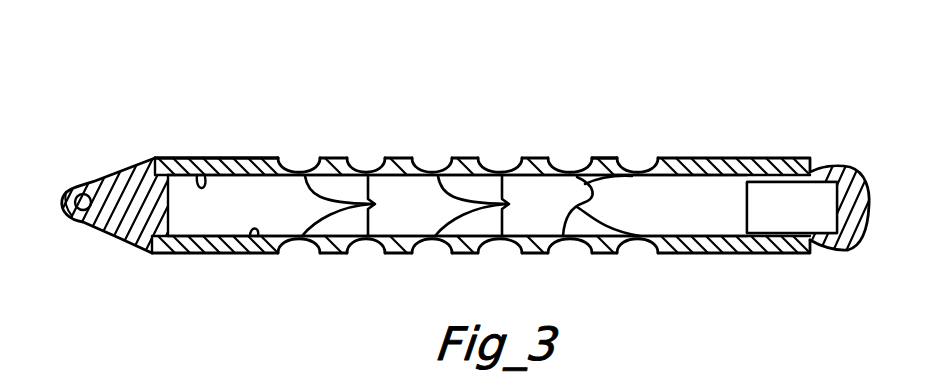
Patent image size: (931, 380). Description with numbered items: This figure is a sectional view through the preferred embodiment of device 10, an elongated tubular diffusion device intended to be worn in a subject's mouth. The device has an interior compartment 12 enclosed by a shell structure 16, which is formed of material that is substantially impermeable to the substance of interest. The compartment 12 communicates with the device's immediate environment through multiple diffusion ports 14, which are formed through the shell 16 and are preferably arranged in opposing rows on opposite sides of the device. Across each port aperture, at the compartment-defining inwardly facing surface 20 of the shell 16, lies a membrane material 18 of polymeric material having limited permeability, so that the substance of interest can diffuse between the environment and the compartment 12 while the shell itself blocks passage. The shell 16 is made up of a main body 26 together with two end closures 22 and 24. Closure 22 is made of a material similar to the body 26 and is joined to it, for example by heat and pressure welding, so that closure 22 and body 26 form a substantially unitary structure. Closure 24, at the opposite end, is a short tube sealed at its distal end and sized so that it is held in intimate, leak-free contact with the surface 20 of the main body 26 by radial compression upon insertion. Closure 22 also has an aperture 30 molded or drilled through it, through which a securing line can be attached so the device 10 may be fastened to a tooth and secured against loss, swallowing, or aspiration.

The device 10 is at (784, 110).
The interior compartment 12 is at (663, 208).
The diffusion ports 14 is at (348, 162).
The shell structure 16 is at (248, 157).
The membrane material 18 is at (471, 205).
The inwardly facing surface 20 is at (200, 175).
The end closure 22 is at (138, 177).
The end closure 24 is at (843, 168).
The main body 26 is at (610, 158).
The aperture 30 is at (83, 194).